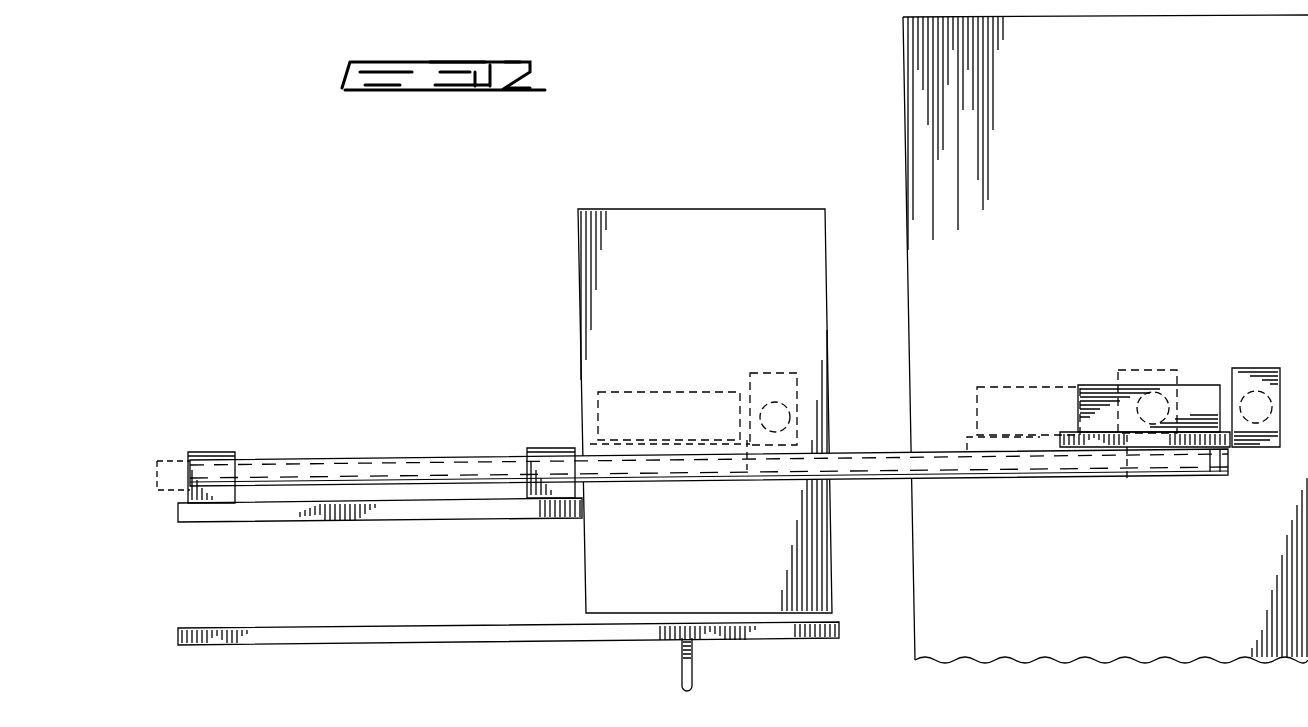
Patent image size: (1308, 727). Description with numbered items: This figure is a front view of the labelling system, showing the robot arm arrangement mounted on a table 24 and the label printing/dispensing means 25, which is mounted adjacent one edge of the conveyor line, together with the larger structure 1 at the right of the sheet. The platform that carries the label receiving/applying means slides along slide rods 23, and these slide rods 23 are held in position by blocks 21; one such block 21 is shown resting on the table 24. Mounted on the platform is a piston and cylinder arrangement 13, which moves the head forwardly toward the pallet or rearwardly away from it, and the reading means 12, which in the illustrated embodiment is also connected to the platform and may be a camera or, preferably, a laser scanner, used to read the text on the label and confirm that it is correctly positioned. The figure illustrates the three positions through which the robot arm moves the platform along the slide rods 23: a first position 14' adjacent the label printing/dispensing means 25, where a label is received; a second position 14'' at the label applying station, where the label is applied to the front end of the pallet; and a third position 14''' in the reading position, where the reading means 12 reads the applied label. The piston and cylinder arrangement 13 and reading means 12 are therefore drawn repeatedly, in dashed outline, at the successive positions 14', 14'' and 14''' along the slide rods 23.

The machine frame / housing 1 is at (1103, 175).
The label printing/dispensing means 25 is at (705, 283).
The piston and cylinder arrangement 13 is at (635, 392).
The reading means 12 is at (750, 380).
The first position 14' is at (670, 480).
The second position 14'' is at (1216, 486).
The third position 14''' is at (1047, 479).
The slide rods 23 is at (997, 470).
The table 24 is at (398, 505).
The blocks 21 is at (547, 478).